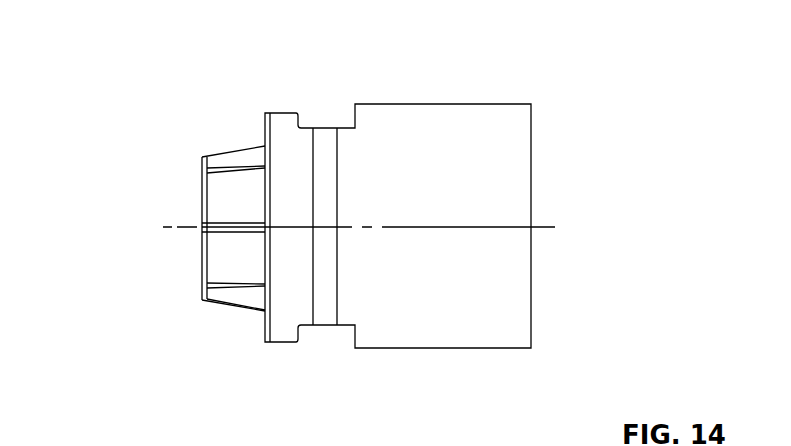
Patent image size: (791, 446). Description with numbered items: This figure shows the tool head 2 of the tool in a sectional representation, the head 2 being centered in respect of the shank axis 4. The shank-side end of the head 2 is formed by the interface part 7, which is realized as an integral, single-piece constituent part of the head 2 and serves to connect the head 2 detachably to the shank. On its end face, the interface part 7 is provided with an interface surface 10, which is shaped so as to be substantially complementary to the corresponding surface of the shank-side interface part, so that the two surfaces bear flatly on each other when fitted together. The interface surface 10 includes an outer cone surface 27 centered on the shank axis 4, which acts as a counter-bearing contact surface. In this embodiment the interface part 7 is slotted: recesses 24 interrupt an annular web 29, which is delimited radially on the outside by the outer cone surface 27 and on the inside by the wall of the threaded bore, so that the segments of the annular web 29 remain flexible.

The head 2 is at (505, 104).
The shank axis 4 is at (553, 227).
The interface part 7 is at (315, 105).
The interface surface 10 is at (245, 130).
The recesses 24 is at (222, 165).
The outer cone surface 27 is at (227, 300).
The annular web 29 is at (222, 250).